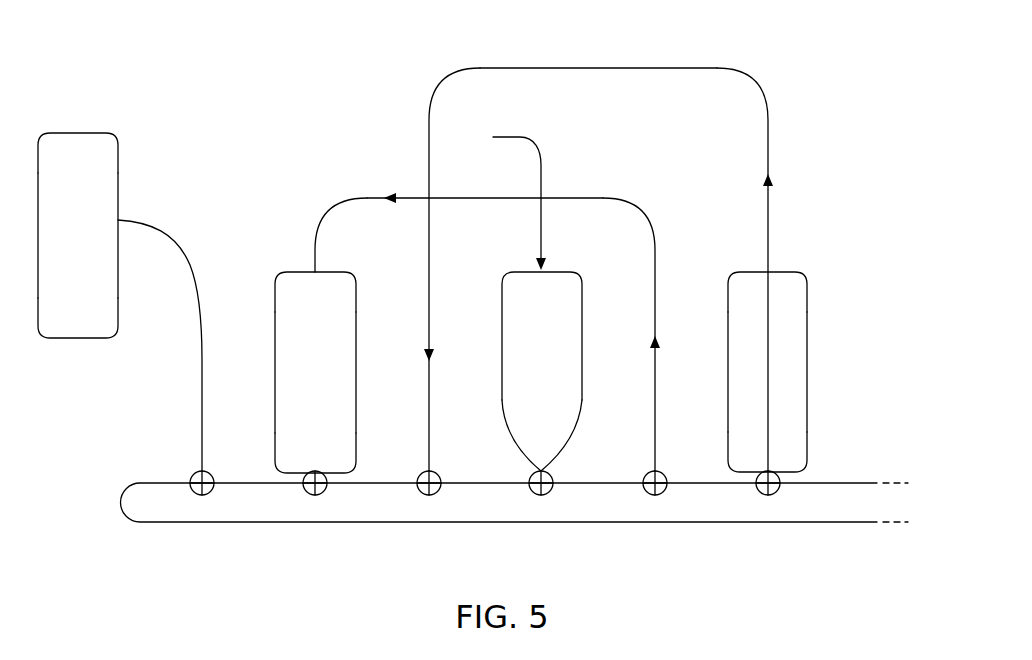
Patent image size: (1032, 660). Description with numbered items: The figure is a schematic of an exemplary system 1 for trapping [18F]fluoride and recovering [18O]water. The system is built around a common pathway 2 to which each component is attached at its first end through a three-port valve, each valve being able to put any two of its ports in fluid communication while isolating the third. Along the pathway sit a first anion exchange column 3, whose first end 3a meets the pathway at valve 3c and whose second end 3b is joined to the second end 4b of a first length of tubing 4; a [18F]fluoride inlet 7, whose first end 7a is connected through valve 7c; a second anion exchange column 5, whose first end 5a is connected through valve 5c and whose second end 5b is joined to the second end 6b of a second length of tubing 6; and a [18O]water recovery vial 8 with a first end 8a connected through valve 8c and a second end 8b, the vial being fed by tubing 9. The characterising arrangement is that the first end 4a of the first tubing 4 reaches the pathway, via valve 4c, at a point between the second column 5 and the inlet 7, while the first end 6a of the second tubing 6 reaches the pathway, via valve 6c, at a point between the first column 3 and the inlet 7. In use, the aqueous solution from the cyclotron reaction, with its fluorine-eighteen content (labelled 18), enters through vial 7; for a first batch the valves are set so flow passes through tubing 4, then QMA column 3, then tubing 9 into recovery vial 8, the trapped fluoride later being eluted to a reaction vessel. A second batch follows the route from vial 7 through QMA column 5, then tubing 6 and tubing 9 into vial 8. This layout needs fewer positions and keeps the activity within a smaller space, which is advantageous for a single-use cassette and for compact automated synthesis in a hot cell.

The system 1 is at (219, 68).
The common pathway 2 is at (822, 515).
The first anion exchange column 3 is at (307, 383).
The first end of first anion exchange column 3a is at (300, 463).
The second end of first anion exchange column 3b is at (300, 303).
The valve 3c is at (307, 493).
The first length of tubing 4 is at (485, 309).
The first end of first length of tubing 4a is at (658, 451).
The second end of first length of tubing 4b is at (313, 254).
The valve 4c is at (648, 493).
The second anion exchange column 5 is at (760, 385).
The first end of second anion exchange column 5a is at (753, 463).
The second end of second anion exchange column 5b is at (753, 305).
The valve 5c is at (761, 493).
The second length of tubing 6 is at (623, 243).
The first end of second length of tubing 6a is at (433, 451).
The second end of second length of tubing 6b is at (770, 244).
The valve 6c is at (420, 494).
The [18F]fluoride inlet 7 is at (533, 304).
The first end of [18F]fluoride inlet 7a is at (526, 435).
The valve 7c is at (534, 493).
The [18O]water recovery vial 8 is at (70, 250).
The first end of [18O]water recovery vial 8a is at (63, 168).
The second end of [18O]water recovery vial 8b is at (63, 328).
The valve 8c is at (194, 493).
The tubing 9 is at (152, 226).
The 18F- fluoride input 18 is at (490, 191).